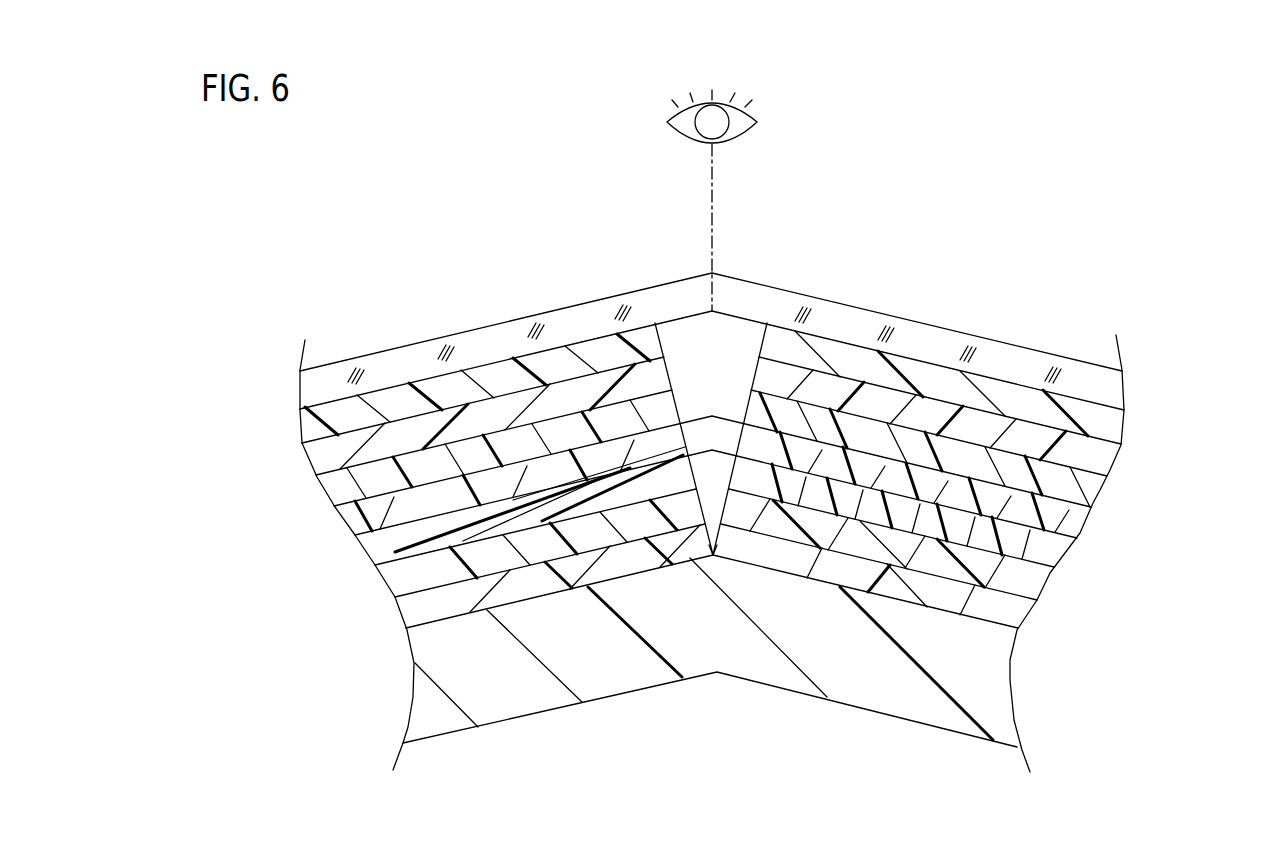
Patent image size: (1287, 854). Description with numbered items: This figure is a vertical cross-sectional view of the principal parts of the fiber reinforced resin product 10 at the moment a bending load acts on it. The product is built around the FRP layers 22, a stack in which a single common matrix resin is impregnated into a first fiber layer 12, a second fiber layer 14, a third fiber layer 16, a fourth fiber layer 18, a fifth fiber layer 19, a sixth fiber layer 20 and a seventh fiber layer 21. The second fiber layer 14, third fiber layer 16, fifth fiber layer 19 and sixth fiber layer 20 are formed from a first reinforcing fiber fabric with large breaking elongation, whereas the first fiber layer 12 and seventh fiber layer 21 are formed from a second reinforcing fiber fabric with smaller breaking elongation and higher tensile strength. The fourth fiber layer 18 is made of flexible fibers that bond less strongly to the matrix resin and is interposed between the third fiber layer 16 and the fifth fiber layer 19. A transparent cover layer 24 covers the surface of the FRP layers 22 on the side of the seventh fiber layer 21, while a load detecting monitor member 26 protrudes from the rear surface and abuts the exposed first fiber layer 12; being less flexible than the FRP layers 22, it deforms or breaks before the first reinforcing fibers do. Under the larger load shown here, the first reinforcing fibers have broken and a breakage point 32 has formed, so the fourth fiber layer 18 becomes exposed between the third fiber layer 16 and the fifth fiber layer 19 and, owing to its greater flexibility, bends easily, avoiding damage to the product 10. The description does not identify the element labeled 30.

The fiber reinforced resin product 10 is at (1023, 328).
The first fiber layer 12 is at (1005, 598).
The second fiber layer 14 is at (1022, 570).
The third fiber layer 16 is at (1048, 542).
The fourth fiber layer 18 is at (1070, 508).
The fifth fiber layer 19 is at (1092, 485).
The sixth fiber layer 20 is at (1095, 452).
The seventh fiber layer 21 is at (1105, 427).
The FRP layers 22 is at (1193, 412).
The transparent cover layer 24 is at (1108, 387).
The load detecting monitor member 26 is at (990, 662).
The groove 30 is at (685, 322).
The breakage point 32 is at (712, 505).